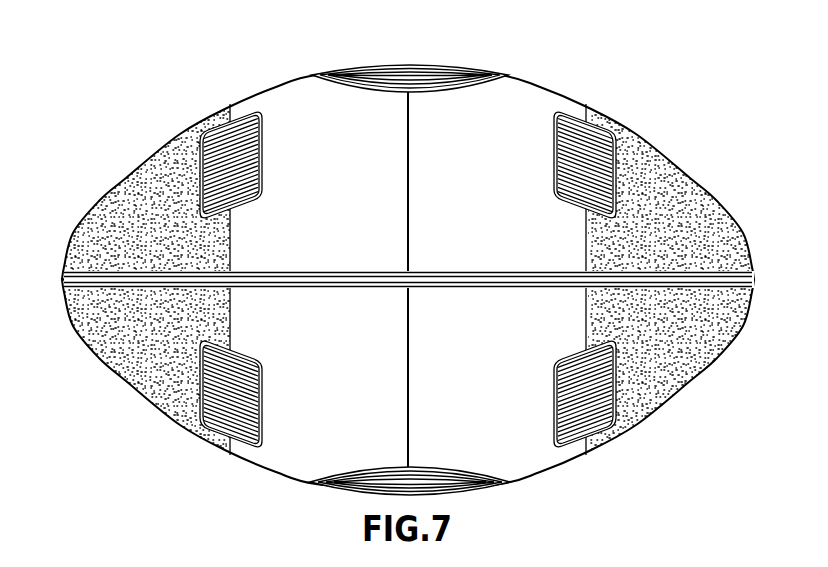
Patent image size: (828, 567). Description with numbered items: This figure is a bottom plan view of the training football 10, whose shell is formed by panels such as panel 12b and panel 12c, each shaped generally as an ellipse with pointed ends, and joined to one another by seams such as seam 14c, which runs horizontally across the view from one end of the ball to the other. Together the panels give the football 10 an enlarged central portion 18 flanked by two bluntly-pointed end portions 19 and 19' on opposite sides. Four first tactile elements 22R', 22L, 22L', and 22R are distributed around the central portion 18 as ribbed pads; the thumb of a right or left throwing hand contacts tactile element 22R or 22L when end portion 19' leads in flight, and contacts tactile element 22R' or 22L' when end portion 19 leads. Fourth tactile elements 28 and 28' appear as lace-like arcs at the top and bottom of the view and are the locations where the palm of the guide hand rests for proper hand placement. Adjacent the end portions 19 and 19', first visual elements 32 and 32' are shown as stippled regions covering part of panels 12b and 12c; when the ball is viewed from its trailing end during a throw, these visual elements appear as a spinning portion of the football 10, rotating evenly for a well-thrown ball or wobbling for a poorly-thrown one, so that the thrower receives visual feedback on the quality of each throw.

The football 10 is at (164, 118).
The panel 12b is at (545, 470).
The panel 12c is at (541, 90).
The seam 14c is at (500, 271).
The central portion 18 is at (404, 227).
The end portion 19 is at (694, 296).
The end portion 19' is at (131, 259).
The first tactile element 22R' is at (269, 165).
The first tactile element 22L is at (552, 165).
The first tactile element 22L' is at (269, 394).
The first tactile element 22R is at (551, 394).
The fourth tactile element 28 is at (410, 51).
The fourth tactile element 28' is at (410, 460).
The first visual element 32 is at (673, 280).
The first visual element 32' is at (145, 280).